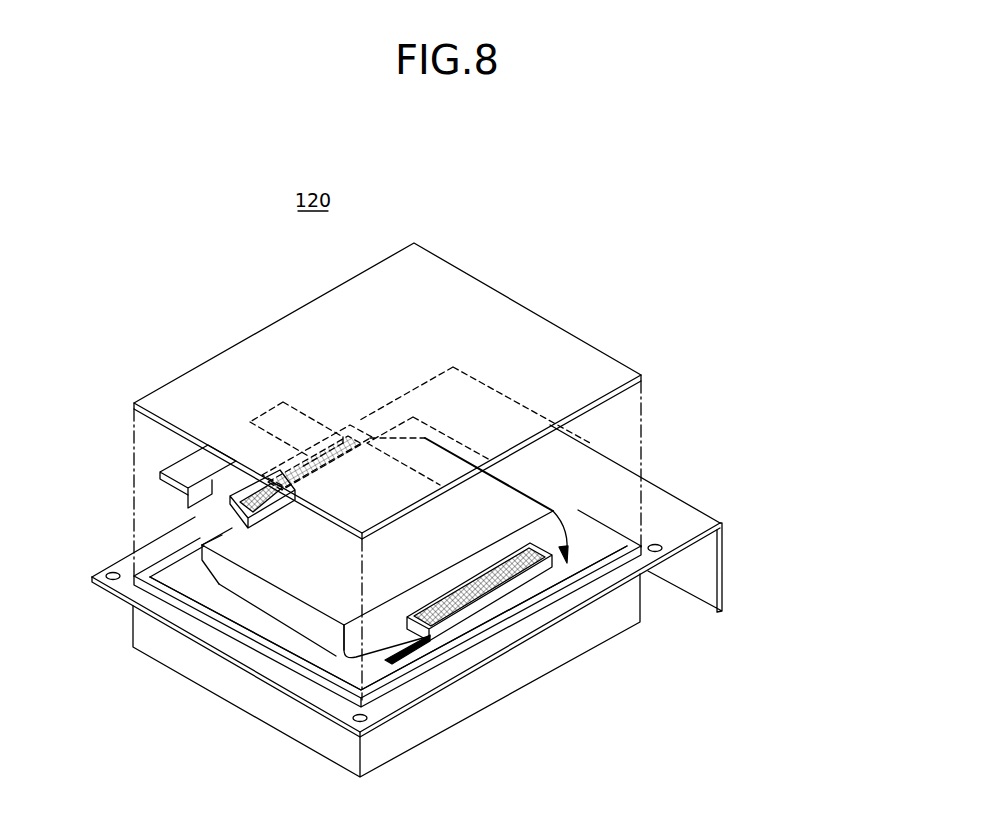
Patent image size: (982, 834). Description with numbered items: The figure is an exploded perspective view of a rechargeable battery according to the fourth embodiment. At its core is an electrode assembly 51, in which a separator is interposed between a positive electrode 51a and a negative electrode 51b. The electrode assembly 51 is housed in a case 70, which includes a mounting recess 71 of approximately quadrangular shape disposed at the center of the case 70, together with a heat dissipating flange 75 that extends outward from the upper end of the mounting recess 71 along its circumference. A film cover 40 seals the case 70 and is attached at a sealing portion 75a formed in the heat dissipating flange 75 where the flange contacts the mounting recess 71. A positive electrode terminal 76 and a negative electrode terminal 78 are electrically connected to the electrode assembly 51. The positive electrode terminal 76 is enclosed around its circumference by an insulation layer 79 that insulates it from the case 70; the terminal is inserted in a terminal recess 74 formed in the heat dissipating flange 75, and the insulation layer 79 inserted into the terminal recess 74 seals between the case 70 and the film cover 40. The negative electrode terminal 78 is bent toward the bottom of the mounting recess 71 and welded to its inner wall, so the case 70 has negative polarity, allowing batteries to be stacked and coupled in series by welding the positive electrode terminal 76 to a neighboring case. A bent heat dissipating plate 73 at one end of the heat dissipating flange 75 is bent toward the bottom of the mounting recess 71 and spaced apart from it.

The film cover 40 is at (443, 290).
The insulation layer 79 is at (274, 436).
The positive electrode terminal 76 is at (188, 467).
The terminal recess 74 is at (213, 517).
The electrode assembly 51 is at (303, 590).
The positive electrode 51a is at (384, 630).
The negative electrode 51b is at (220, 548).
The negative electrode terminal 78 is at (527, 608).
The heat dissipating flange 75 is at (316, 690).
The sealing portion 75a is at (288, 660).
The case 70 is at (690, 503).
The heat dissipating plate 73 is at (725, 570).
The mounting recess 71 is at (427, 722).